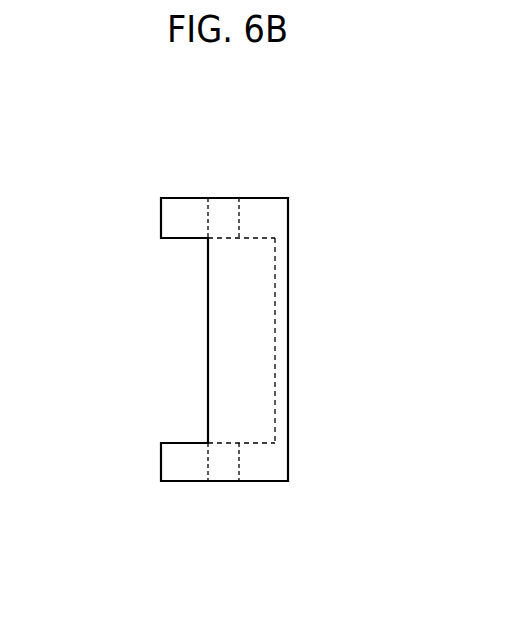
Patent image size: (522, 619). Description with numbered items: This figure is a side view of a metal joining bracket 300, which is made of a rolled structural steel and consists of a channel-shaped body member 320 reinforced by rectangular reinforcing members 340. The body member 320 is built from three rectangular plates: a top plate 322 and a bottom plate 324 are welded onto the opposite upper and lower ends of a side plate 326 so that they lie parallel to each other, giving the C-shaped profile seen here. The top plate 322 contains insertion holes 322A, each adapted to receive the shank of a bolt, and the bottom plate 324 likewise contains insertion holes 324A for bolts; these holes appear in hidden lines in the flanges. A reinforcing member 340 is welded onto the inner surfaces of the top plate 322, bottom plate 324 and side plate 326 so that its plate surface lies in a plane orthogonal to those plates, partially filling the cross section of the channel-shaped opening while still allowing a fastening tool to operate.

The metal joining bracket 300 is at (225, 344).
The body member 320 is at (225, 345).
The top plate 322 is at (252, 205).
The insertion hole 322A is at (208, 218).
The bottom plate 324 is at (253, 478).
The insertion hole 324A is at (208, 450).
The side plate 326 is at (288, 329).
The reinforcing member 340 is at (212, 320).